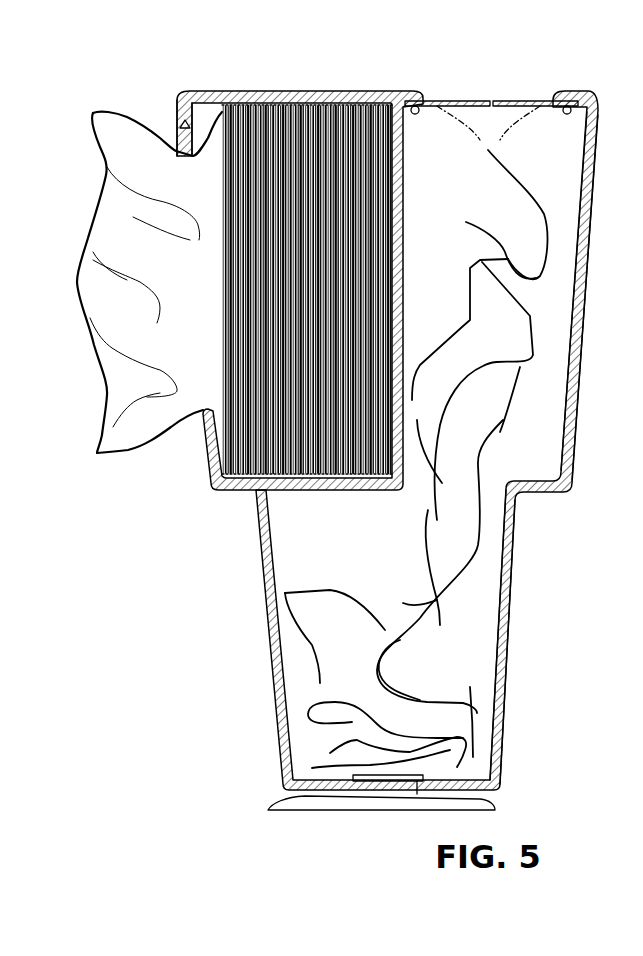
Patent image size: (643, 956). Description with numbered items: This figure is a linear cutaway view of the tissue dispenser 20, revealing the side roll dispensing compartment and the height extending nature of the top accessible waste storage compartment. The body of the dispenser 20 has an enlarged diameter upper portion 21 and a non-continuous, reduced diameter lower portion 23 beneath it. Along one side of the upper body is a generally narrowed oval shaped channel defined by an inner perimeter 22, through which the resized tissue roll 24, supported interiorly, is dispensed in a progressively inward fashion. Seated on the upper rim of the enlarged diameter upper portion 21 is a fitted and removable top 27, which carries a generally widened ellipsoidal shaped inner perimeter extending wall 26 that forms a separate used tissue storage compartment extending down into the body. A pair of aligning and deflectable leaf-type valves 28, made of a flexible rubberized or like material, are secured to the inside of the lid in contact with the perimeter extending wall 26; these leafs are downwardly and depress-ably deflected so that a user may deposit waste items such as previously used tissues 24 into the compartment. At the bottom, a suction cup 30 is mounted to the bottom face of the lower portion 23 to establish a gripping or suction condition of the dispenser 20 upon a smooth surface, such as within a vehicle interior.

The tissue dispenser 20 is at (211, 629).
The enlarged diameter upper portion 21 is at (588, 246).
The inner perimeter 22 is at (174, 148).
The reduced diameter lower portion 23 is at (513, 580).
The tissue roll 24 is at (124, 236).
The inner perimeter extending wall 26 is at (430, 102).
The removable top 27 is at (297, 97).
The leaf-type valves 28 is at (480, 102).
The suction cup 30 is at (310, 795).